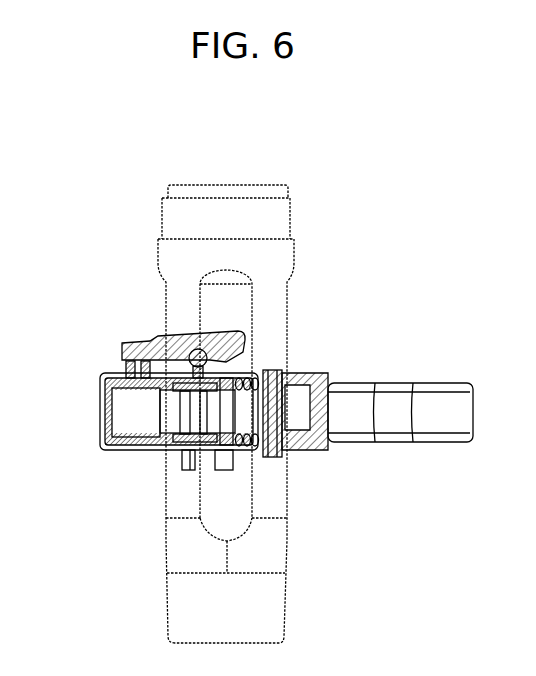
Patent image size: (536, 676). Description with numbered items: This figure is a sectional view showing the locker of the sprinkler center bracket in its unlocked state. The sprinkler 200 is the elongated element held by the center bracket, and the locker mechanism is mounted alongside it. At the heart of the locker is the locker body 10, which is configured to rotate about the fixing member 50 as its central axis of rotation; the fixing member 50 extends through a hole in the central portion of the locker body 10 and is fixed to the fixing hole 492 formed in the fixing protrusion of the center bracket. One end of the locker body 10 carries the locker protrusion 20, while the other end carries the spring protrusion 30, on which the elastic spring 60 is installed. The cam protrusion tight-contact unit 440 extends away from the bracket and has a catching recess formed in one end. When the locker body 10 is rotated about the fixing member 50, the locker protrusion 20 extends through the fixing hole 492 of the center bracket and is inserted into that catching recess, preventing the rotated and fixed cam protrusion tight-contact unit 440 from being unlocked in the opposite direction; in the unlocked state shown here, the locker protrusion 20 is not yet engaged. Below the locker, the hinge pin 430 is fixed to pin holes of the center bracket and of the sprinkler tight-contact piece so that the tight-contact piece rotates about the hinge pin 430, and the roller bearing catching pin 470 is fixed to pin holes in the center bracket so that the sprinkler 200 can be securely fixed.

The sprinkler 200 is at (273, 284).
The locker body 10 is at (162, 342).
The spring protrusion 30 is at (128, 367).
The fixing member 50 is at (212, 357).
The elastic spring 60 is at (100, 388).
The fixing hole 492 is at (195, 372).
The hinge pin 430 is at (182, 467).
The roller bearing catching pin 470 is at (217, 462).
The locker protrusion 20 is at (307, 452).
The cam protrusion tight-contact unit 440 is at (392, 422).